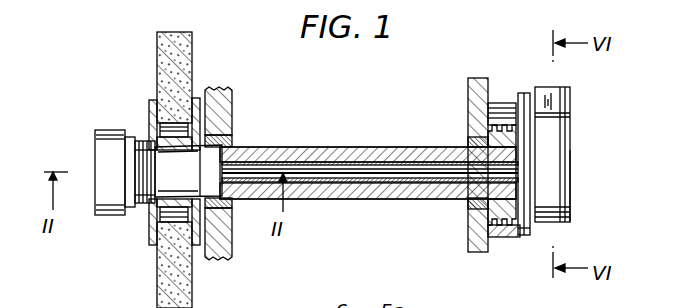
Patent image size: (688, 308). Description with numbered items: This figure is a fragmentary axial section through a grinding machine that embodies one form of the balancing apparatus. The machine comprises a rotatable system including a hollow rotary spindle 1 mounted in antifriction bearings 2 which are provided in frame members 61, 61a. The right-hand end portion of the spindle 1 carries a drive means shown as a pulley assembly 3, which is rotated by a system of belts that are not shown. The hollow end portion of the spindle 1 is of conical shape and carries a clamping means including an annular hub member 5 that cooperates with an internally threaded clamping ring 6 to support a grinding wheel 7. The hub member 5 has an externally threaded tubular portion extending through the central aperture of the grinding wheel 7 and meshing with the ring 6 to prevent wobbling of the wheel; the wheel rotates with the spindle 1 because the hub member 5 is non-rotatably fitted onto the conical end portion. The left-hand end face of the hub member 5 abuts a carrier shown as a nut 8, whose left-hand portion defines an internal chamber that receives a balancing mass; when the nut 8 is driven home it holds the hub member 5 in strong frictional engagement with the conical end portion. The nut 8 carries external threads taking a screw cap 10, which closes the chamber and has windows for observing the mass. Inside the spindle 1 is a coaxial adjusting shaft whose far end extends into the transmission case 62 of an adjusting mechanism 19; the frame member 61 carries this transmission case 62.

The hollow rotary spindle 1 is at (338, 148).
The antifriction bearings 2 is at (229, 141).
The pulley assembly 3 is at (491, 135).
The annular hub member 5 is at (197, 98).
The internally threaded clamping ring 6 is at (152, 105).
The grinding wheel 7 is at (163, 50).
The nut 8 is at (135, 136).
The screw cap 10 is at (97, 144).
The adjusting mechanism 19 is at (574, 199).
The frame member 61 is at (470, 94).
The frame member 61a is at (222, 107).
The transmission case 62 is at (560, 103).